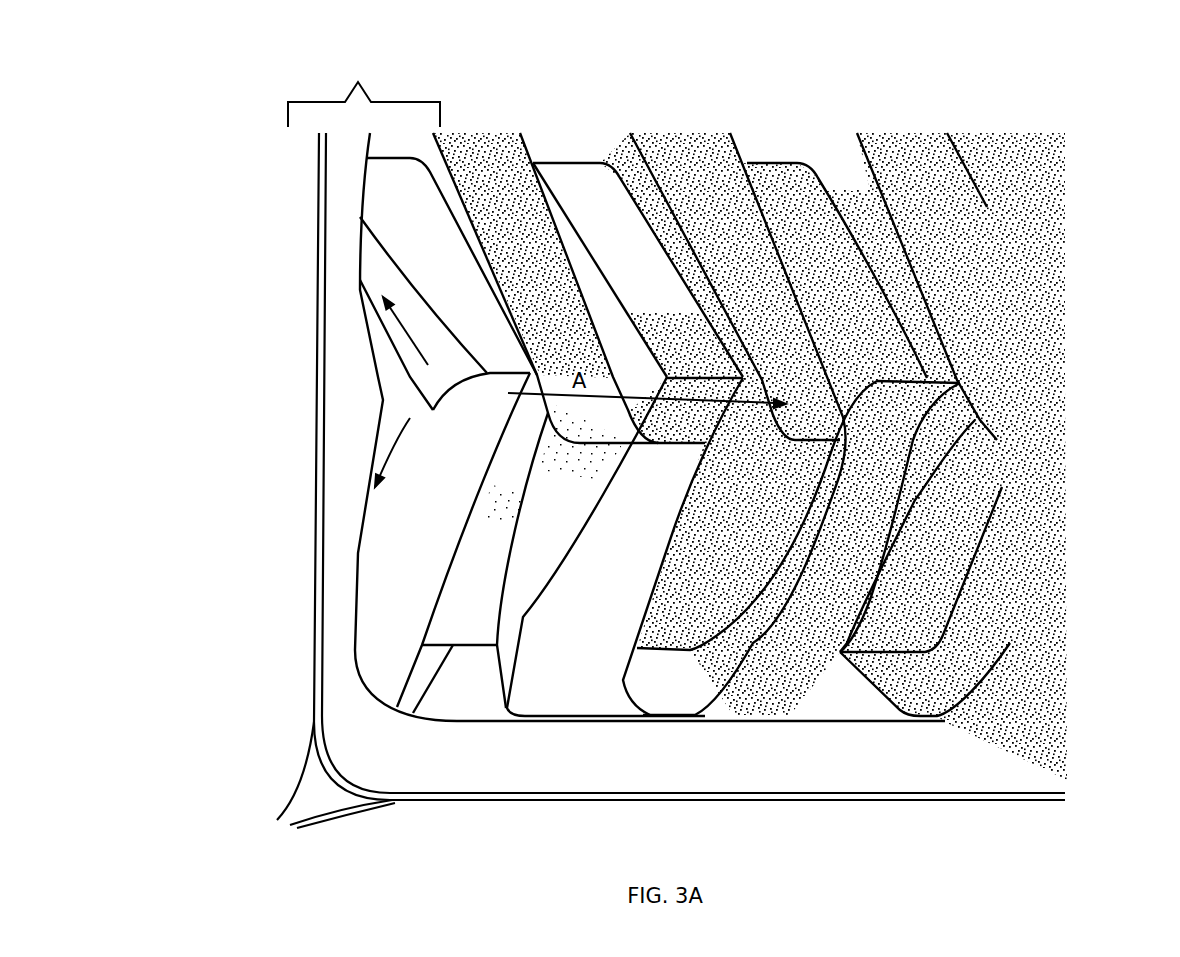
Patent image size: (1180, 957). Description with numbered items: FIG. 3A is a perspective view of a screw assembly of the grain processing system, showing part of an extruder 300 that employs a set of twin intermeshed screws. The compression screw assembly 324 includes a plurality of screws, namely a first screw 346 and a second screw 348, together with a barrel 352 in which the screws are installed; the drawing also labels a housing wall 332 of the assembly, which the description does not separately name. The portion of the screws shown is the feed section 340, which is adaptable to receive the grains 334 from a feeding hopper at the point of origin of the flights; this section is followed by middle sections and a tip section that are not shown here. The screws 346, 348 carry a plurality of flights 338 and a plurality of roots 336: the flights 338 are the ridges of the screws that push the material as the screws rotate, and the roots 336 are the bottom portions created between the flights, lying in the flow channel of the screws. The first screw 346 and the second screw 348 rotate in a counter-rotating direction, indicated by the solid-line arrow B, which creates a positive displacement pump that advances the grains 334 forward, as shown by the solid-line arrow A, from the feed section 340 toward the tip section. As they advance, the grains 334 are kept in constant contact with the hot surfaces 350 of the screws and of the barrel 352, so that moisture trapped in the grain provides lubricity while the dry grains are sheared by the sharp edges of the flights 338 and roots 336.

The extruder 300 is at (781, 97).
The compression screw assembly 324 is at (315, 353).
The housing bottom wall 332 is at (783, 802).
The grains 334 is at (1022, 358).
The roots 336 is at (388, 190).
The flights 338 is at (533, 163).
The feed section 340 is at (364, 91).
The first screw 346 is at (408, 254).
The second screw 348 is at (378, 627).
The hot surface of the screws 350 is at (401, 532).
The barrel 352 is at (671, 774).